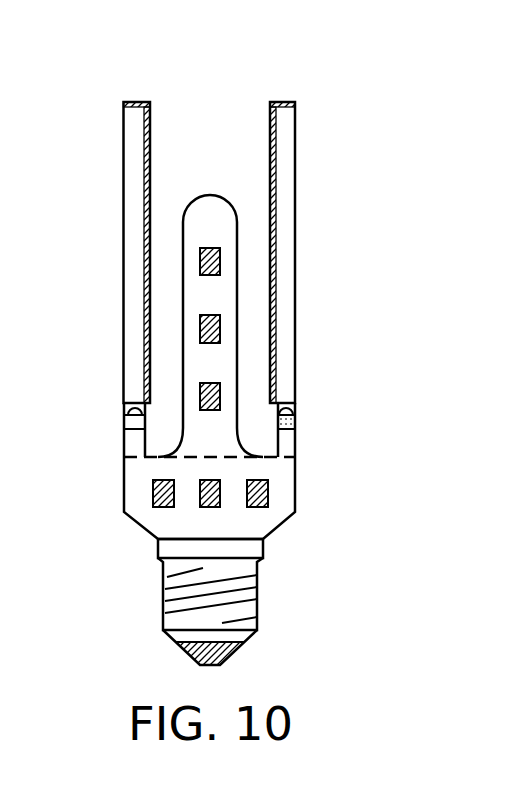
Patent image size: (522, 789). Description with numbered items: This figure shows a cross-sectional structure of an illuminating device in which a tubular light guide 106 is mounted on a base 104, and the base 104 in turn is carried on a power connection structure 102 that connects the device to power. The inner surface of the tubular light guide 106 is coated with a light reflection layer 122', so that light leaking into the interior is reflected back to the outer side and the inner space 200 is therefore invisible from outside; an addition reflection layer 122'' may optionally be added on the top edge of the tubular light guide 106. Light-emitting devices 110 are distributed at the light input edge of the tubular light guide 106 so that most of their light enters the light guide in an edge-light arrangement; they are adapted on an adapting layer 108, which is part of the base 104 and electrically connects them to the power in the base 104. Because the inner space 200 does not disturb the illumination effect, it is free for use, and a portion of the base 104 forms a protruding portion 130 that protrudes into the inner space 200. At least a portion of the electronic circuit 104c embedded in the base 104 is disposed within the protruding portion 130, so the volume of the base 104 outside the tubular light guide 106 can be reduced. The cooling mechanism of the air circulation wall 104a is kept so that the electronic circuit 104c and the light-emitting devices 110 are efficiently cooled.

The inner space 200 is at (206, 152).
The addition reflection layer 122'' is at (148, 214).
The light reflection layer 122' is at (183, 228).
The electronic circuit 104c is at (210, 262).
The tubular light guide 106 is at (290, 243).
The protruding portion 130 is at (238, 300).
The light-emitting device 110 is at (295, 413).
The adapting layer 108 is at (293, 422).
The air circulation wall 104a is at (288, 440).
The base 104 is at (288, 478).
The power connection structure 102 is at (252, 595).